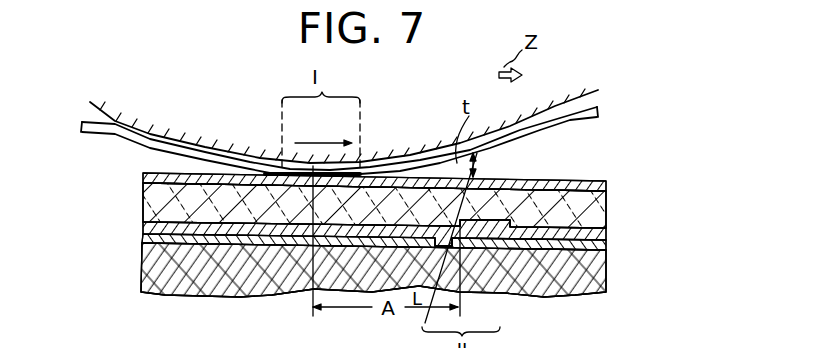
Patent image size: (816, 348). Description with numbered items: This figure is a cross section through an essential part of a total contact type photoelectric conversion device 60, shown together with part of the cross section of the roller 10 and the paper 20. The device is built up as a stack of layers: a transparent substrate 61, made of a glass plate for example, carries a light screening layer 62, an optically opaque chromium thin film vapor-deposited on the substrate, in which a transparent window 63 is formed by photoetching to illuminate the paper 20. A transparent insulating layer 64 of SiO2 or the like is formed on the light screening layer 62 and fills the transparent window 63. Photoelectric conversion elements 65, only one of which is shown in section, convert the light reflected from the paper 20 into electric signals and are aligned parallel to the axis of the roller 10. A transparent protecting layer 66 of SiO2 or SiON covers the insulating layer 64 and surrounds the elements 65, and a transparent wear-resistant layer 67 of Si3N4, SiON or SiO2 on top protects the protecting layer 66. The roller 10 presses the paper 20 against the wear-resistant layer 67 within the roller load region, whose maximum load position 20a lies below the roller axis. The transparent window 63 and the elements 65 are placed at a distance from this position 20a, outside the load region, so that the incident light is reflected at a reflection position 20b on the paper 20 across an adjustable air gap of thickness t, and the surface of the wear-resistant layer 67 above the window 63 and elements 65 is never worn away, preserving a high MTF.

The roller 10 is at (88, 104).
The paper 20 is at (576, 118).
The maximum load position 20a is at (312, 166).
The reflection position 20b is at (478, 154).
The total contact type photoelectric conversion device 60 is at (322, 249).
The transparent substrate 61 is at (340, 270).
The light screening layer 62 is at (143, 241).
The transparent window 63 is at (438, 248).
The transparent insulating layer 64 is at (147, 229).
The photoelectric conversion elements 65 is at (478, 153).
The transparent protecting layer 66 is at (143, 205).
The transparent wear-resistant layer 67 is at (143, 180).